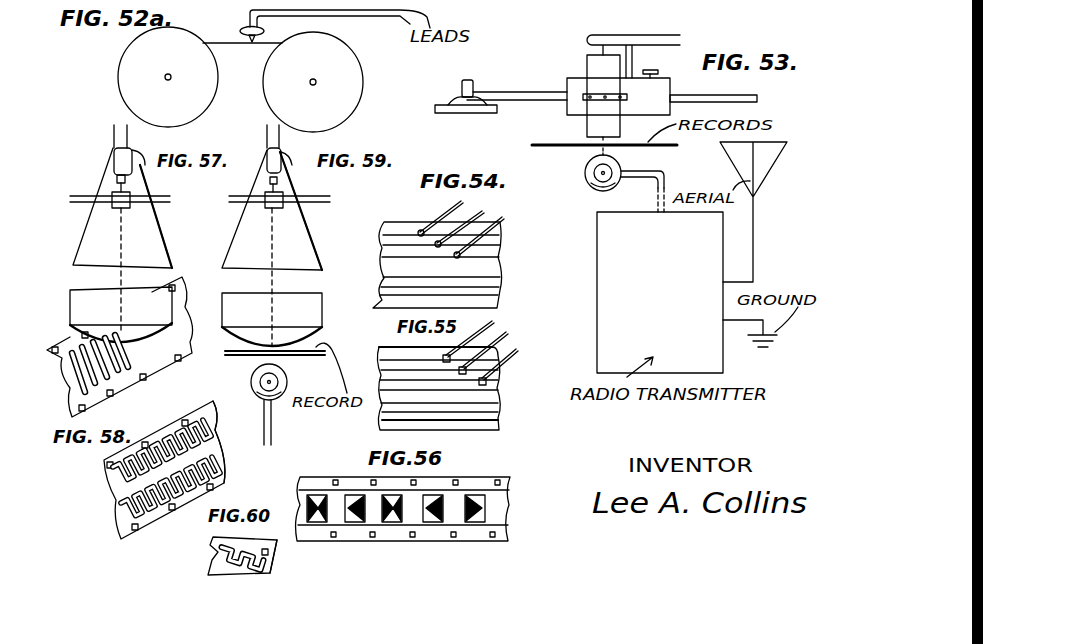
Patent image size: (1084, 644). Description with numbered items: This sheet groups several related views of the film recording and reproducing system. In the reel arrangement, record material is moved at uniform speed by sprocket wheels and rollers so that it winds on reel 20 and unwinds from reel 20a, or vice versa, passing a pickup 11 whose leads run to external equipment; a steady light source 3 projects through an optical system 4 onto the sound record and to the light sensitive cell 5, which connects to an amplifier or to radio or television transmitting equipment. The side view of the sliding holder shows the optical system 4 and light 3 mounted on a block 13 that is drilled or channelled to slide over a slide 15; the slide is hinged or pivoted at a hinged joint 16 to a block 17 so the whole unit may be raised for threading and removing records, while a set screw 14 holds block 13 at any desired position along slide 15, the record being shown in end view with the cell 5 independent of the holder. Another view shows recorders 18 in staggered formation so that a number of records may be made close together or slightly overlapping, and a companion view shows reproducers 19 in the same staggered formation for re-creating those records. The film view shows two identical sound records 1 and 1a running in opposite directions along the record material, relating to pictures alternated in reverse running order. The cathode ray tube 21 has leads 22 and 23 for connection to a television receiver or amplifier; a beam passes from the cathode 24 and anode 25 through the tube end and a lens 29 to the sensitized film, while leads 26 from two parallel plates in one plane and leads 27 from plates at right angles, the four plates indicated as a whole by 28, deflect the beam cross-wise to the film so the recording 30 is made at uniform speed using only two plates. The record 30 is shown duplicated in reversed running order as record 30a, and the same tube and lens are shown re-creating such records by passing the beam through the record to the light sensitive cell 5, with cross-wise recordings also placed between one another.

In FIG. 56, the sound record 1 is at (325, 477).
In FIG. 56, the sound record 1a is at (503, 528).
In FIG. 53, the light source 3 is at (587, 40).
In FIG. 53, the optical system 4 is at (598, 66).
In FIG. 53, the light sensitive cell 5 is at (585, 174).
In FIG. 59, the light sensitive cell 5 is at (288, 380).
In FIG. 52A, the pickup head 11 is at (240, 31).
In FIG. 53, the block 13 is at (567, 85).
In FIG. 53, the set screw 14 is at (658, 73).
In FIG. 53, the slide 15 is at (743, 97).
In FIG. 53, the hinged joint 16 is at (460, 88).
In FIG. 53, the block 17 is at (482, 112).
In FIG. 54, the recorders 18 is at (420, 230).
In FIG. 55, the reproducers 19 is at (489, 381).
In FIG. 52A, the reel 20 is at (153, 100).
In FIG. 52A, the reel 20a is at (290, 103).
In FIG. 57, the cathode ray tube 21 is at (98, 217).
In FIG. 57, the lead 22 is at (113, 148).
In FIG. 59, the lead 22 is at (267, 140).
In FIG. 57, the lead 23 is at (138, 160).
In FIG. 59, the lead 23 is at (282, 140).
In FIG. 57, the cathode 24 is at (135, 183).
In FIG. 59, the cathode 24 is at (283, 173).
In FIG. 57, the anode 25 is at (117, 179).
In FIG. 57, the leads 26 is at (70, 198).
In FIG. 59, the leads 26 is at (240, 197).
In FIG. 57, the leads 27 is at (170, 202).
In FIG. 59, the leads 27 is at (333, 201).
In FIG. 57, the plates 28 is at (132, 208).
In FIG. 59, the plates 28 is at (284, 206).
In FIG. 57, the lens 29 is at (77, 297).
In FIG. 59, the lens 29 is at (312, 307).
In FIG. 57, the record 30 is at (83, 347).
In FIG. 58, the record 30 is at (118, 475).
In FIG. 60, the record 30 is at (213, 547).
In FIG. 58, the record 30a is at (215, 468).
In FIG. 60, the record 30a is at (270, 568).